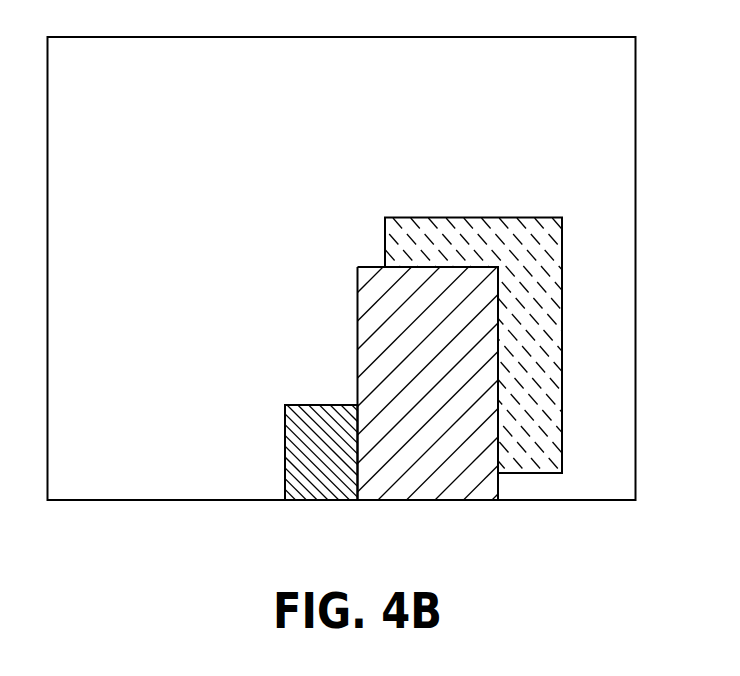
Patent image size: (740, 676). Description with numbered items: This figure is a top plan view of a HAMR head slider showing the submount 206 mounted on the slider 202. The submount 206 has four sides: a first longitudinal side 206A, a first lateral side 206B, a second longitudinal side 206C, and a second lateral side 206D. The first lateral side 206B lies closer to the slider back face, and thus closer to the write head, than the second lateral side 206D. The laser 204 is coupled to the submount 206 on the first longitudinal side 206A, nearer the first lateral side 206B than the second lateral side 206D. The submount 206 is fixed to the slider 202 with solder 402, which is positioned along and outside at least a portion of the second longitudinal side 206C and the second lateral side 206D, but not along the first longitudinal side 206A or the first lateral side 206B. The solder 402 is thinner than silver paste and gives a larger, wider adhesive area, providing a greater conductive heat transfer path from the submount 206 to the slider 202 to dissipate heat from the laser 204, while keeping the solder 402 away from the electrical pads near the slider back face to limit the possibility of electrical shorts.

The slider 202 is at (610, 80).
The laser 204 is at (300, 455).
The submount 206 is at (421, 381).
The first longitudinal side 206A is at (357, 353).
The first lateral side 206B is at (415, 502).
The second longitudinal side 206C is at (500, 487).
The second lateral side 206D is at (370, 266).
The solder 402 is at (473, 230).